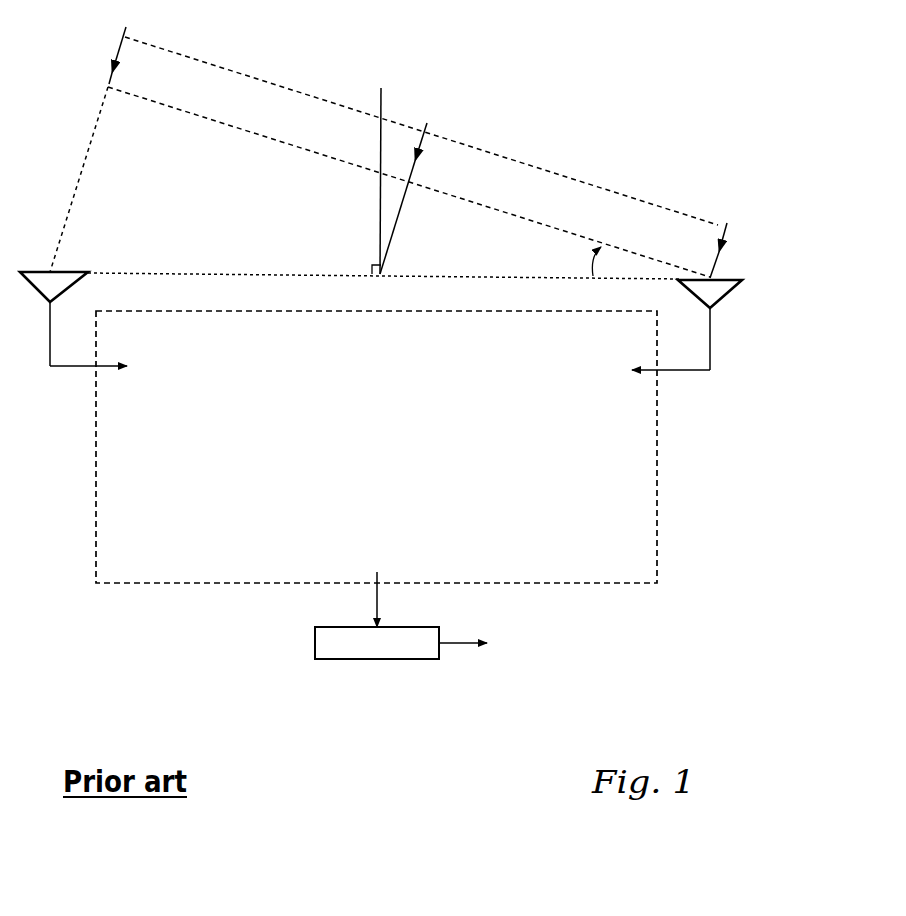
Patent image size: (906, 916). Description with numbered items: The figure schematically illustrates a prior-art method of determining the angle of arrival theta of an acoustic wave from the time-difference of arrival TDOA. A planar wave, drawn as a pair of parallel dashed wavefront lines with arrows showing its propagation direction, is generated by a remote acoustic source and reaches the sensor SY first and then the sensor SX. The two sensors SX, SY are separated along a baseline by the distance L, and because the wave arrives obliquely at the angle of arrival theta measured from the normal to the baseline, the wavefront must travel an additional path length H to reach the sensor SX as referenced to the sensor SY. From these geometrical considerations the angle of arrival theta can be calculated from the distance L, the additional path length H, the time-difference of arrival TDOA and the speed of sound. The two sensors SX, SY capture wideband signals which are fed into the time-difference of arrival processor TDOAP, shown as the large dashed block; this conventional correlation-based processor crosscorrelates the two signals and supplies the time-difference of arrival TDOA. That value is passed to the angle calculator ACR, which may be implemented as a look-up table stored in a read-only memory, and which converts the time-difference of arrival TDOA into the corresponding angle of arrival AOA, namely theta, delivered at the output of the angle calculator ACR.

The sensor SX is at (58, 319).
The sensor SY is at (719, 325).
The additional path length H is at (79, 179).
The distance between sensors L is at (384, 280).
The angle of arrival theta is at (501, 232).
The planar wave wavefront is at (413, 157).
The time-difference of arrival processor TDOAP is at (153, 585).
The time-difference of arrival TDOA is at (360, 599).
The angle calculator ACR is at (377, 643).
The angle of arrival AOA is at (463, 645).